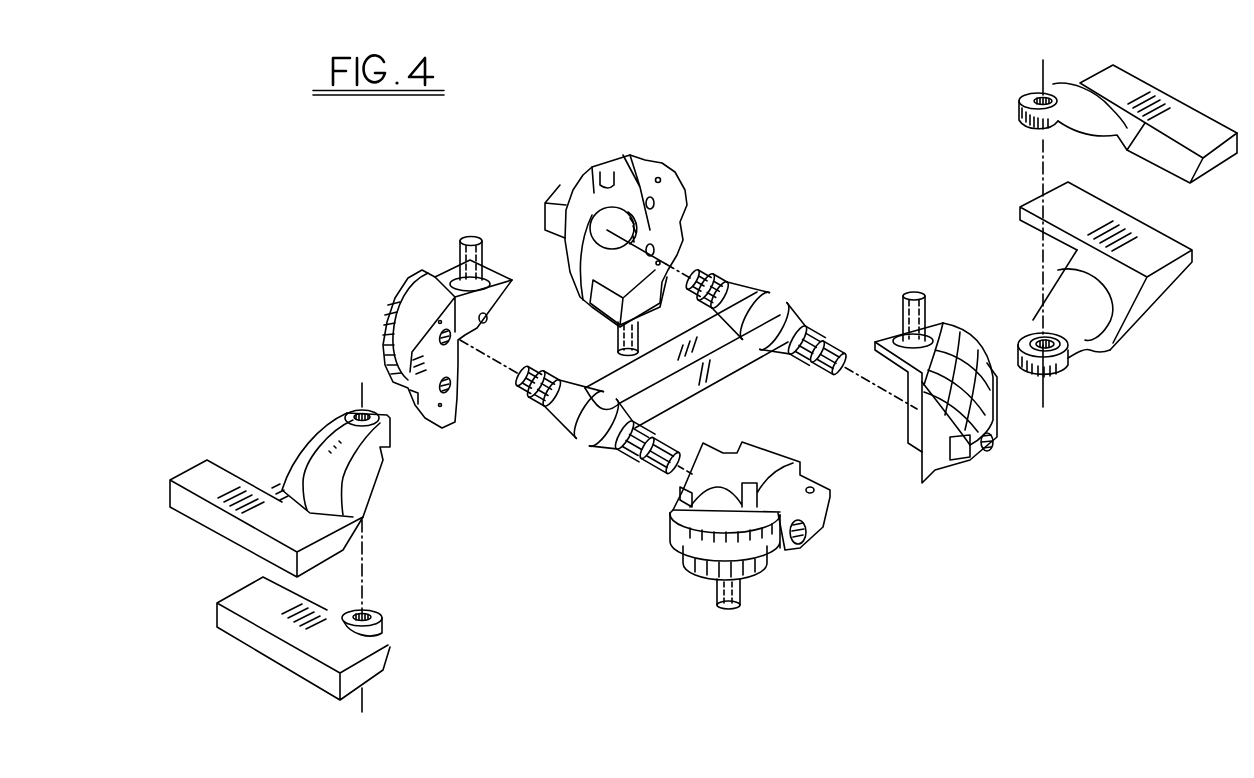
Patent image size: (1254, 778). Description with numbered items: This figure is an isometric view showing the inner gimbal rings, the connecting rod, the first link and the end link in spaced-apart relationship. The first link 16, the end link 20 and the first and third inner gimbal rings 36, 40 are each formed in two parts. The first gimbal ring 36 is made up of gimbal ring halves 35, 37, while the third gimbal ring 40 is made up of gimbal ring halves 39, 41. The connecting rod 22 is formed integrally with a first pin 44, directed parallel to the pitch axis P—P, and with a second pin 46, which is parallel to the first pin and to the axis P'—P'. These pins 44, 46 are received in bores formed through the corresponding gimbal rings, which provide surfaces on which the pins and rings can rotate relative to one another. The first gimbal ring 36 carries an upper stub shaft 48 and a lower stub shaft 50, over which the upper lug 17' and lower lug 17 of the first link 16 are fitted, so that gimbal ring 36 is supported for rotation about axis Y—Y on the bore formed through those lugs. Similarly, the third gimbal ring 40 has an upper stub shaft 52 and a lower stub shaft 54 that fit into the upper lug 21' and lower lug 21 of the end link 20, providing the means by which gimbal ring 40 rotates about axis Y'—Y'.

The first link 16 is at (190, 561).
The lower lug of first link 17 is at (303, 638).
The upper lug of first link 17' is at (272, 493).
The end link 20 is at (1218, 238).
The lower lug of end link 21 is at (1120, 279).
The upper lug of end link 21' is at (1128, 118).
The connecting rod 22 is at (737, 373).
The gimbal ring half 35 is at (416, 286).
The first inner gimbal ring 36 is at (489, 430).
The gimbal ring half 37 is at (680, 554).
The gimbal ring half 39 is at (672, 190).
The third inner gimbal ring 40 is at (737, 219).
The gimbal ring half 41 is at (927, 457).
The first pin 44 is at (650, 457).
The second pin 46 is at (840, 352).
The upper stub shaft 48 is at (473, 241).
The lower stub shaft 50 is at (722, 607).
The upper stub shaft 52 is at (921, 295).
The lower stub shaft 54 is at (617, 350).